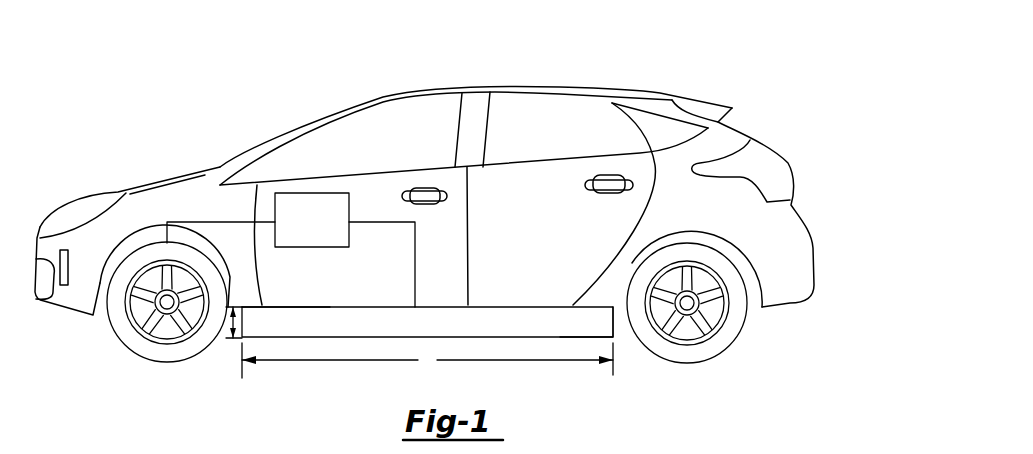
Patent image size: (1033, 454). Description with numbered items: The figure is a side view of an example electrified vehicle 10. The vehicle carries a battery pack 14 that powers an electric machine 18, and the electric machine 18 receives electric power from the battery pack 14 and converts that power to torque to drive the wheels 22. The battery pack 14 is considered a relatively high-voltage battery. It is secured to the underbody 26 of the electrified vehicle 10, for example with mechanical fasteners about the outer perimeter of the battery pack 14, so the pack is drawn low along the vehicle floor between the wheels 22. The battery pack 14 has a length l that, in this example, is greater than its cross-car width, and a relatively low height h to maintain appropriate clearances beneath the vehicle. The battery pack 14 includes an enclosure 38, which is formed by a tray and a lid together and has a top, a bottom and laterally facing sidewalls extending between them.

The electrified vehicle 10 is at (621, 50).
The battery pack 14 is at (540, 338).
The electric machine 18 is at (275, 208).
The wheels 22 is at (128, 351).
The underbody 26 is at (305, 307).
The enclosure 38 is at (577, 323).
The length l is at (427, 360).
The height h is at (222, 325).